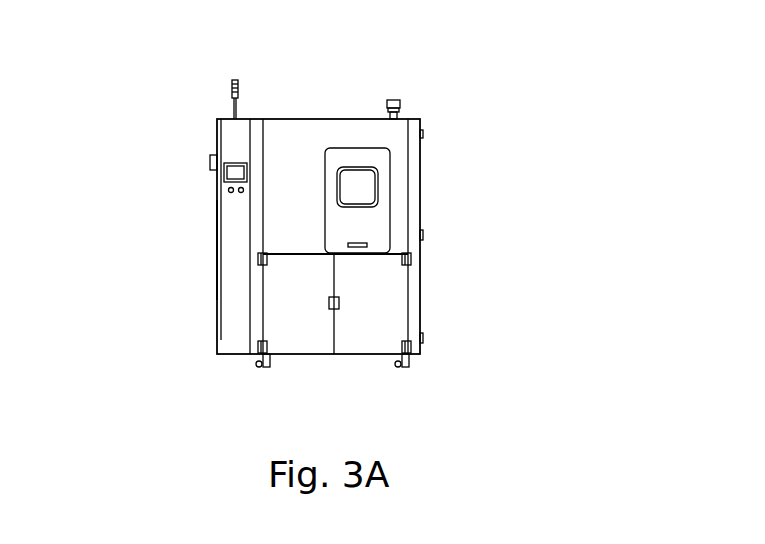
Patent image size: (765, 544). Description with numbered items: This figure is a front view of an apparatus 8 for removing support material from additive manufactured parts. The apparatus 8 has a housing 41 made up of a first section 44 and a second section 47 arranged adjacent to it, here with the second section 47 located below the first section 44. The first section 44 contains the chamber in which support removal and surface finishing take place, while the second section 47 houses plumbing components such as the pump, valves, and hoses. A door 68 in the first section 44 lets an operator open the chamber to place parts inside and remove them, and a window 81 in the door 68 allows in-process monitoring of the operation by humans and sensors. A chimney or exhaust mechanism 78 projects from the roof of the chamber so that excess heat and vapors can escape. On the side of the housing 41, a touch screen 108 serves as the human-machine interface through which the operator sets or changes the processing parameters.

The apparatus 8 is at (190, 322).
The housing 41 is at (190, 228).
The first section 44 is at (298, 136).
The second section 47 is at (294, 330).
The door 68 is at (373, 218).
The window 81 is at (378, 186).
The chimney or exhaust mechanism 78 is at (395, 100).
The touch screen 108 is at (224, 173).